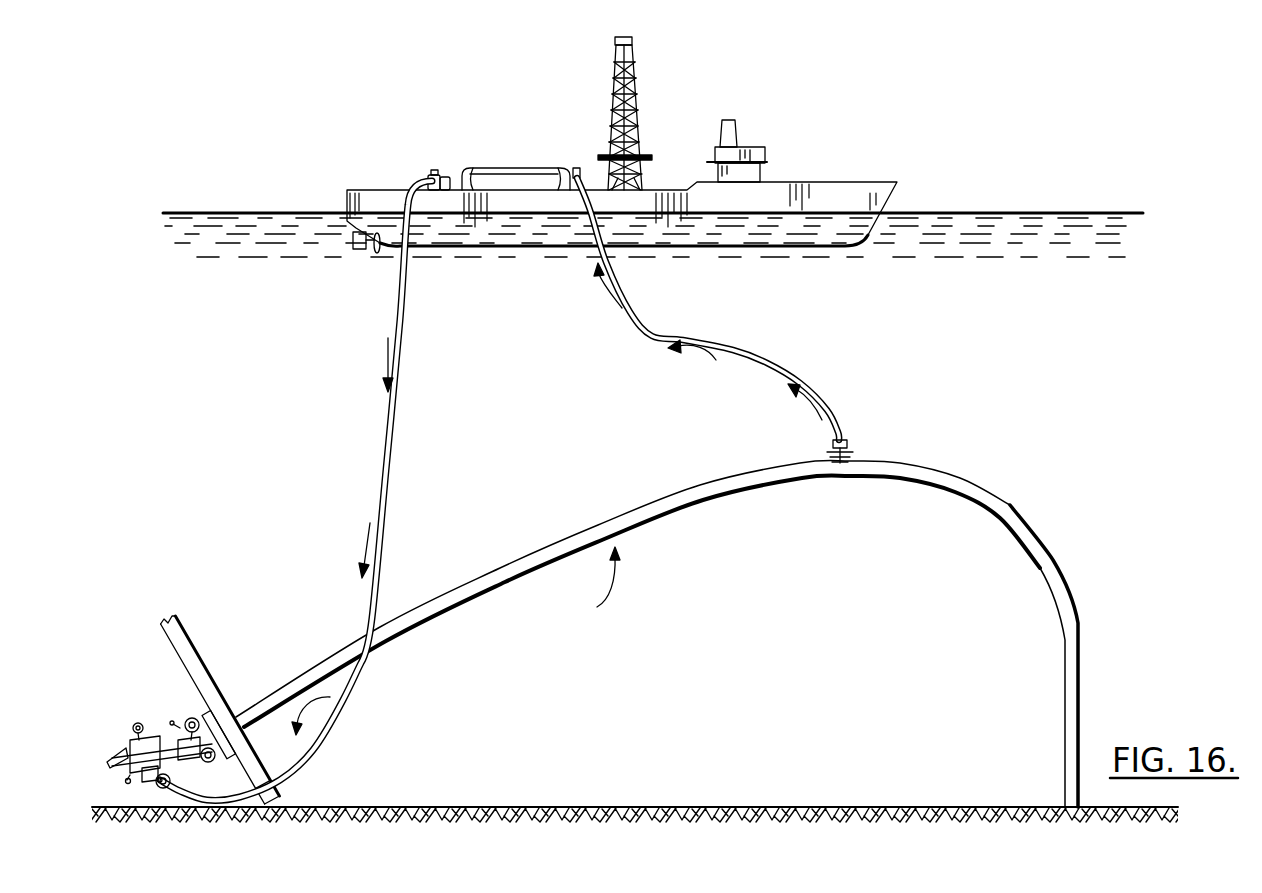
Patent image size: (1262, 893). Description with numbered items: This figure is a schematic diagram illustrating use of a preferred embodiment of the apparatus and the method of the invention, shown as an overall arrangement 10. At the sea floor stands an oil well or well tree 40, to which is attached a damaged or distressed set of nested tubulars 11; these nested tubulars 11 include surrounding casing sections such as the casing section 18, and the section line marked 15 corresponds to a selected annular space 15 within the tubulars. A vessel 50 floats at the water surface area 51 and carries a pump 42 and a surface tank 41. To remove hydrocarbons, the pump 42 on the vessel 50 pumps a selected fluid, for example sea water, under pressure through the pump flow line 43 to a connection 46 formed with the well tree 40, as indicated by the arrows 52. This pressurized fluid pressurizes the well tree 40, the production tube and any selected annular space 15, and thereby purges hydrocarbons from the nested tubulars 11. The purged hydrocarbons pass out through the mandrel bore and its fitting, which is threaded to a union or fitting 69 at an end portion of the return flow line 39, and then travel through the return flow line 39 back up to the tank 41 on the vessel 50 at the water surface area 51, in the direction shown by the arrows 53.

The subsea flowline system 10 is at (657, 590).
The nested tubulars 11 is at (595, 586).
The annular space 15 is at (842, 414).
The casing section 18 is at (598, 528).
The return flow line 39 is at (737, 348).
The well tree 40 is at (187, 713).
The surface tank 41 is at (540, 173).
The pump 42 is at (437, 174).
The pump flow line 43 is at (400, 438).
The connection 46 is at (157, 779).
The vessel 50 is at (868, 180).
The water surface area 51 is at (1017, 214).
The arrows 52 is at (386, 352).
The arrows 53 is at (613, 297).
The union or fitting 69 is at (832, 443).